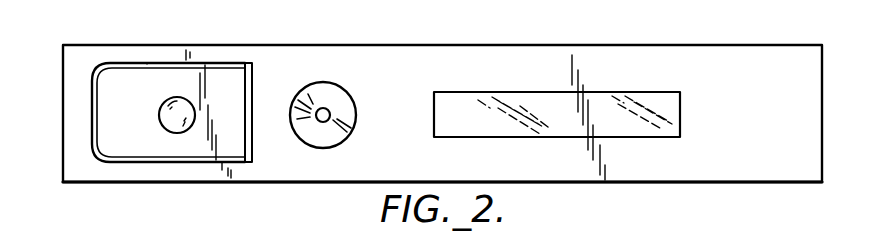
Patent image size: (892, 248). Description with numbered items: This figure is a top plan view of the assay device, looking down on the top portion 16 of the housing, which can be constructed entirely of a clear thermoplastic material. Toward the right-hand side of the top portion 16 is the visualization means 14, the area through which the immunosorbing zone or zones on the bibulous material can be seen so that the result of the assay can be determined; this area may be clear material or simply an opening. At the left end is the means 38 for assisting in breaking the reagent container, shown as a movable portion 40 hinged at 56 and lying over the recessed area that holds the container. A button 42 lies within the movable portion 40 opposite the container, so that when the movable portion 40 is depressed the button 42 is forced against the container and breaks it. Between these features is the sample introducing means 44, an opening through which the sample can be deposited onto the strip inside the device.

The visualization means 14 is at (457, 100).
The top portion of housing 16 is at (604, 45).
The means for assisting in breaking the container 38 is at (140, 86).
The movable portion 40 is at (147, 63).
The button 42 is at (182, 98).
The sample introducing means 44 is at (336, 90).
The hinge 56 is at (251, 82).